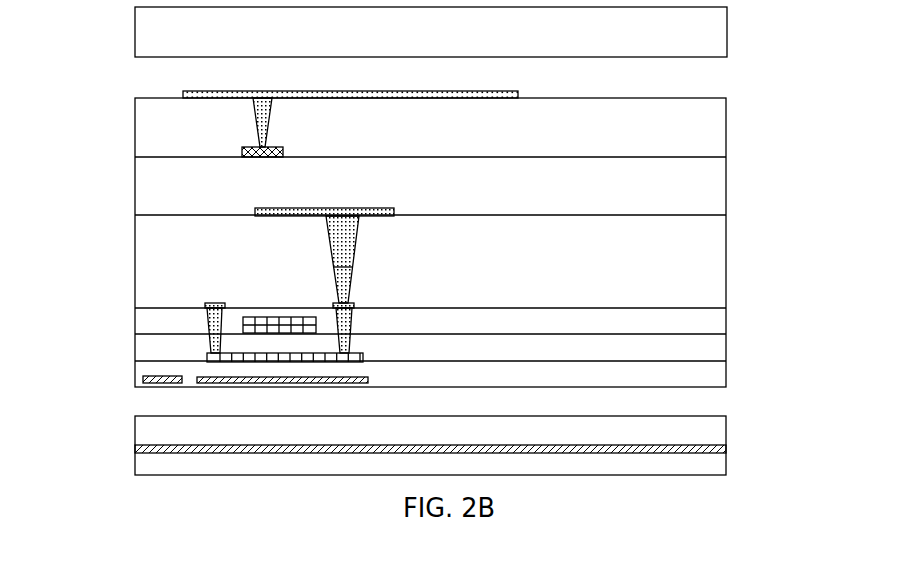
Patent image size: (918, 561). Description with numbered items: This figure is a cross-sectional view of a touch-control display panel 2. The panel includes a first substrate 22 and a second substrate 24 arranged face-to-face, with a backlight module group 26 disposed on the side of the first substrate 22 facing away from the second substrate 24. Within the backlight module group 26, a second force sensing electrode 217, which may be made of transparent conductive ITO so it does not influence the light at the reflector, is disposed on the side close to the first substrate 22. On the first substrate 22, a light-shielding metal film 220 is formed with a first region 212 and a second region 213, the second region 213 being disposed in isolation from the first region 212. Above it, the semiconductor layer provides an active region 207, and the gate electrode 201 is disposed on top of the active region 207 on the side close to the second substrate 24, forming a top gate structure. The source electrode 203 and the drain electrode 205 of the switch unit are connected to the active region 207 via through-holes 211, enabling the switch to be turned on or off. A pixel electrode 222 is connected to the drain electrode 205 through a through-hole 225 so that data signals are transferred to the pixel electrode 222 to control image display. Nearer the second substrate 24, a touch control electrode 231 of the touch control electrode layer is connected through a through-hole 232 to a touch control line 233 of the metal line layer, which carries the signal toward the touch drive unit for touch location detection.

The touch-control display panel 2 is at (60, 38).
The second substrate 24 is at (727, 36).
The first substrate 22 is at (726, 373).
The backlight module group 26 is at (727, 416).
The second force sensing electrode 217 is at (702, 450).
The touch control electrode 231 is at (518, 91).
The through-hole 232 is at (262, 131).
The touch control line 233 is at (243, 148).
The pixel electrode 222 is at (308, 208).
The through-hole 225 is at (332, 263).
The drain electrode 205 is at (340, 303).
The gate electrode 201 is at (300, 318).
The source electrode 203 is at (210, 305).
The through-hole 211 is at (216, 336).
The active region 207 is at (218, 353).
The first region 212 is at (200, 378).
The second region 213 is at (152, 378).
The light-shielding metal film 220 is at (62, 357).